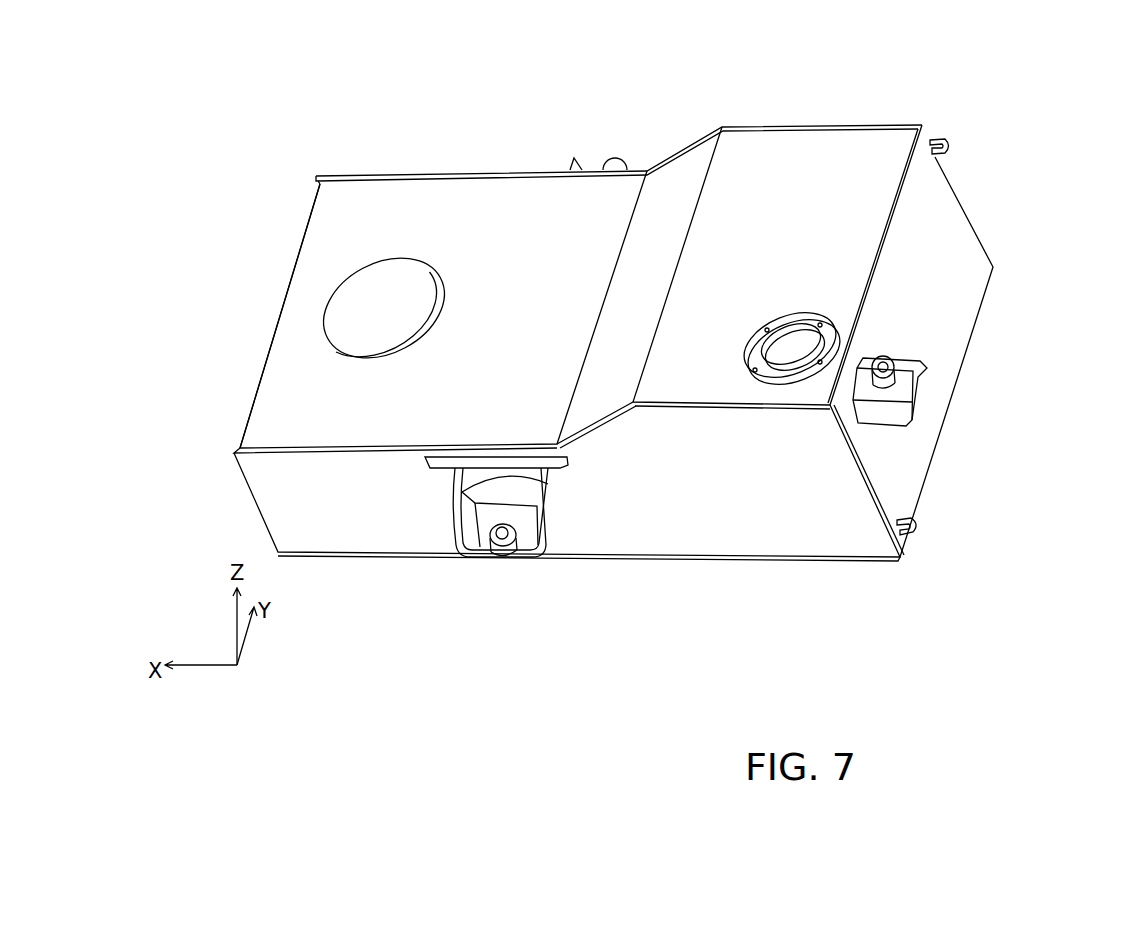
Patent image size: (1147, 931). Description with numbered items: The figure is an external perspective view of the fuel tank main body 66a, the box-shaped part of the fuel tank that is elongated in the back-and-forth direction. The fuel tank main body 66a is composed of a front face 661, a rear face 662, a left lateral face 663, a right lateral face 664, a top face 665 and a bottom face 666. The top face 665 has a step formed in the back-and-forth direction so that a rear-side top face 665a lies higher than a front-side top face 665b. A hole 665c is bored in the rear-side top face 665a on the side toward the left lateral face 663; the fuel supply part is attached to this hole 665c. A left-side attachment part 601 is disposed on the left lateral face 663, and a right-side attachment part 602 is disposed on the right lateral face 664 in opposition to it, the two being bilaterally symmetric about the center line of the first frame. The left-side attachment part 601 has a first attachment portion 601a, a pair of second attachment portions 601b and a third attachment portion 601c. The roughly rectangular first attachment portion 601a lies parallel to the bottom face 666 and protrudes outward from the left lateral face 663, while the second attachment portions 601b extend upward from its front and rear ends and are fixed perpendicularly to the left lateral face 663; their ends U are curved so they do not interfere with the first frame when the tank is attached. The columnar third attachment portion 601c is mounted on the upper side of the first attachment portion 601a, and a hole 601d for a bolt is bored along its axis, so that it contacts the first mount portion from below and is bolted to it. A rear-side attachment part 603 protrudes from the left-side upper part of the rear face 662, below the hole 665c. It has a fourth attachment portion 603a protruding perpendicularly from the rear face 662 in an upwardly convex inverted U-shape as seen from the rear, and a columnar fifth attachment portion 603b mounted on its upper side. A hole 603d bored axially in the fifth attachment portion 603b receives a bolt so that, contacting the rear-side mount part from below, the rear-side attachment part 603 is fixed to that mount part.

The fuel tank main body 66a is at (615, 363).
The front face 661 is at (262, 378).
The rear face 662 is at (957, 317).
The left lateral face 663 is at (400, 518).
The right lateral face 664 is at (750, 124).
The top face 665 is at (713, 190).
The rear-side top face 665a is at (840, 178).
The front-side top face 665b is at (523, 197).
The hole 665c is at (783, 352).
The bottom face 666 is at (848, 560).
The left-side attachment part 601 is at (555, 573).
The first attachment portion 601a is at (528, 545).
The second attachment portions 601b is at (470, 505).
The third attachment portion 601c is at (497, 553).
The hole 601d is at (505, 548).
The right-side attachment part 602 is at (612, 160).
The rear-side attachment part 603 is at (985, 430).
The fourth attachment portion 603a is at (885, 410).
The fifth attachment portion 603b is at (890, 380).
The hole 603d is at (890, 362).
The ends U is at (548, 490).